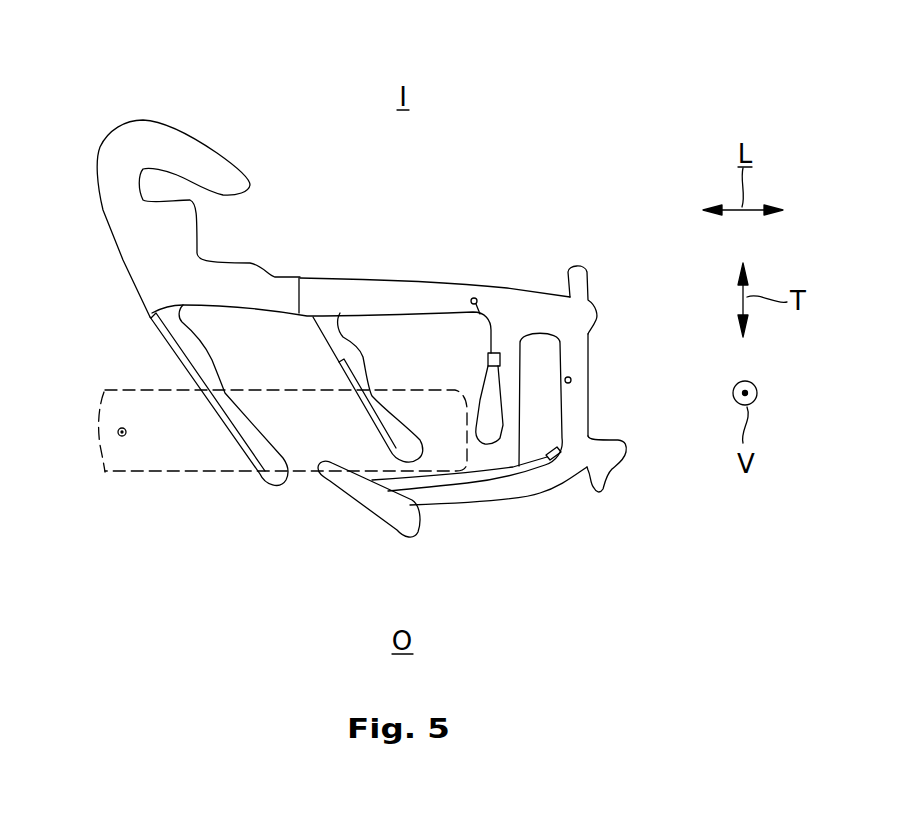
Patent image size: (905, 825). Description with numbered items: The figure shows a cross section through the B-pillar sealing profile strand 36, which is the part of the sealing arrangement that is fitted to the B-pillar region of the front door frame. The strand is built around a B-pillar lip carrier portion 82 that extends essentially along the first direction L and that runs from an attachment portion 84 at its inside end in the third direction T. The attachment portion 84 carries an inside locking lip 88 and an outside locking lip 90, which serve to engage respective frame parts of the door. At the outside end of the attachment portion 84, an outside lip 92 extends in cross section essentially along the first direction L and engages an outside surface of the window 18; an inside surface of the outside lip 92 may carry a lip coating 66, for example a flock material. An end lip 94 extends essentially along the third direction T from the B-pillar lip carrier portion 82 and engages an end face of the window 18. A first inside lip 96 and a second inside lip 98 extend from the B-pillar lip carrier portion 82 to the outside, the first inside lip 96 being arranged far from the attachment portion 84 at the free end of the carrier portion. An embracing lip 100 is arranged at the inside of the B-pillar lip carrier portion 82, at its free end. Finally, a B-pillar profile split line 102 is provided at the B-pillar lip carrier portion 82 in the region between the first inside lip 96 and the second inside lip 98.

The window 18 is at (105, 397).
The B-pillar sealing profile strand 36 is at (607, 139).
The lip coating 66 is at (231, 437).
The B-pillar lip carrier portion 82 is at (531, 284).
The attachment portion 84 is at (575, 407).
The inside locking lip 88 is at (583, 278).
The outside locking lip 90 is at (603, 478).
The outside lip 92 is at (352, 495).
The end lip 94 is at (500, 423).
The first inside lip 96 is at (233, 418).
The second inside lip 98 is at (365, 381).
The embracing lip 100 is at (160, 137).
The B-pillar profile split line 102 is at (298, 297).